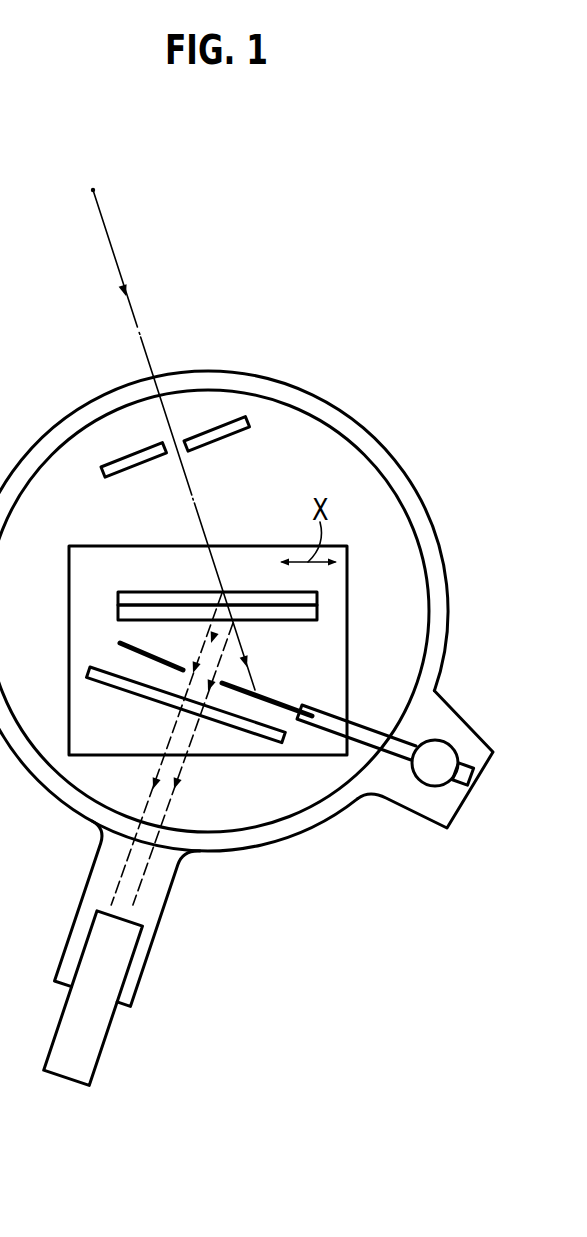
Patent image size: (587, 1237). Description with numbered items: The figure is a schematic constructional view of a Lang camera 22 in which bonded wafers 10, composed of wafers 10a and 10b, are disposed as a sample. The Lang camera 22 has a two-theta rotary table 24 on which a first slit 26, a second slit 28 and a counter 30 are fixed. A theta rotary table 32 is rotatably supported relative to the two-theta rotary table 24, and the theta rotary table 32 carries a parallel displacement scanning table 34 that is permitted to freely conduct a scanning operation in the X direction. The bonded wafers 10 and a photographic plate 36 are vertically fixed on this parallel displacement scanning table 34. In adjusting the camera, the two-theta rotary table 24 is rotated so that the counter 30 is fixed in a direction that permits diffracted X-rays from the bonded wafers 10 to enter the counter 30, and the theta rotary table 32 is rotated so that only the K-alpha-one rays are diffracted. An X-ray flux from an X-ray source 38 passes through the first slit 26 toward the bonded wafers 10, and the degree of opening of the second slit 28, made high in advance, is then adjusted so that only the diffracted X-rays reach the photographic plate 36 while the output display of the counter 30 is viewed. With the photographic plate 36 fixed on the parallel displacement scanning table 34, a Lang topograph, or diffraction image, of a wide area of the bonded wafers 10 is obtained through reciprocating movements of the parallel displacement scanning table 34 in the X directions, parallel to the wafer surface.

The bonded wafers 10 is at (234, 642).
The wafer 10a is at (298, 607).
The wafer 10b is at (256, 624).
The Lang camera 22 is at (293, 258).
The 2θ rotary table 24 is at (443, 561).
The first slit 26 is at (232, 437).
The second slit 28 is at (284, 708).
The counter 30 is at (108, 1044).
The θ rotary table 32 is at (402, 501).
The parallel displacement scanning table 34 is at (347, 636).
The photographic plate 36 is at (237, 744).
The X-ray source 38 is at (93, 190).